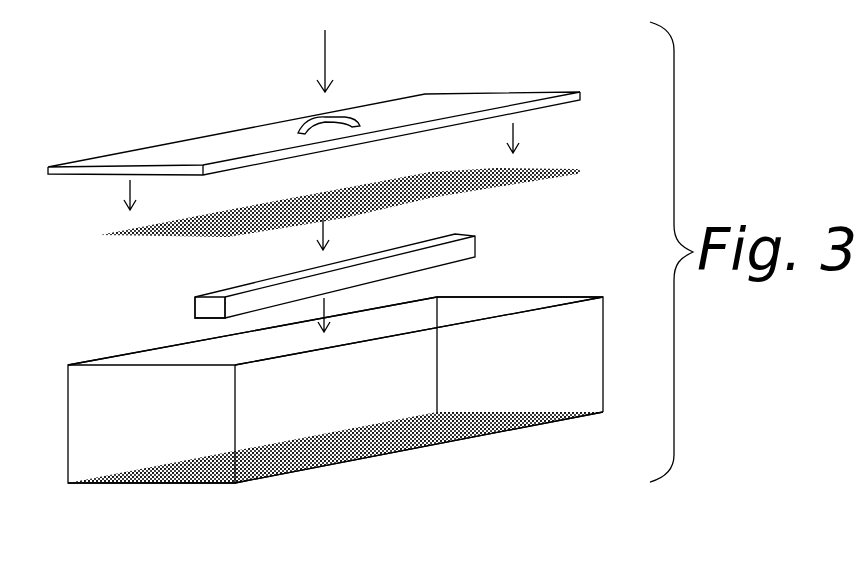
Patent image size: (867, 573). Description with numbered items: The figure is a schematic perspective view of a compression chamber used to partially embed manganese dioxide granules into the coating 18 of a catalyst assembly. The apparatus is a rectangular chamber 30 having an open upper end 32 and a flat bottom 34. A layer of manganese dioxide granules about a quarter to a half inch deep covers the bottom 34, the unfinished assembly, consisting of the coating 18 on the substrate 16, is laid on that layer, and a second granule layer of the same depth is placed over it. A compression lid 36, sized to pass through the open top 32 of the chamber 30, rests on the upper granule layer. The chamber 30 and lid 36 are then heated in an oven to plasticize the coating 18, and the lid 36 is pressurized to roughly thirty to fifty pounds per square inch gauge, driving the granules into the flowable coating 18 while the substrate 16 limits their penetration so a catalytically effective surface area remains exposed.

The substrate 16 is at (195, 307).
The coating 18 is at (453, 236).
The rectangular chamber 30 is at (581, 350).
The open upper end 32 is at (528, 304).
The flat bottom 34 is at (365, 459).
The compression lid 36 is at (508, 92).